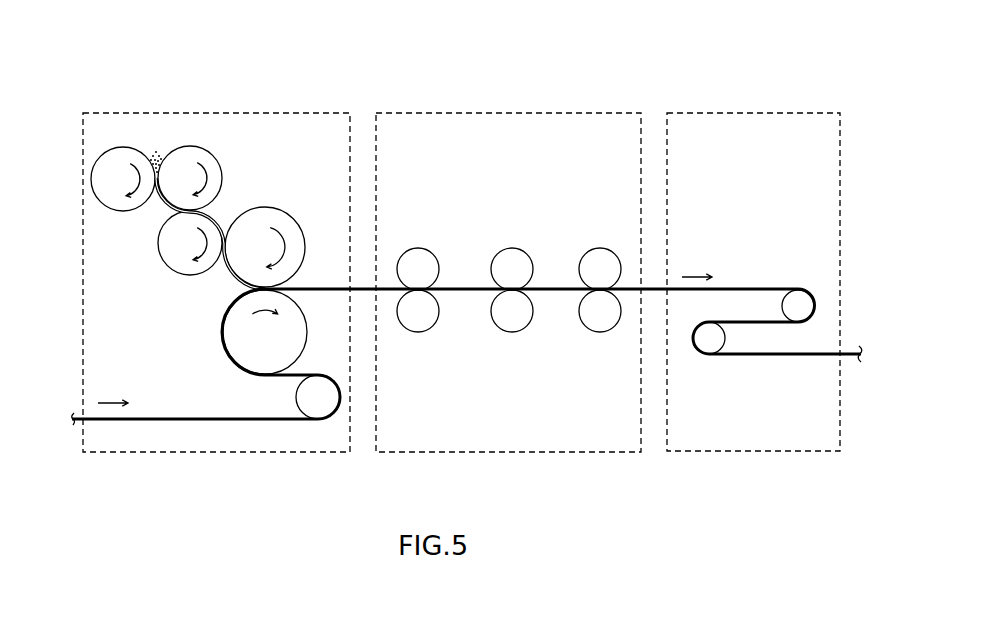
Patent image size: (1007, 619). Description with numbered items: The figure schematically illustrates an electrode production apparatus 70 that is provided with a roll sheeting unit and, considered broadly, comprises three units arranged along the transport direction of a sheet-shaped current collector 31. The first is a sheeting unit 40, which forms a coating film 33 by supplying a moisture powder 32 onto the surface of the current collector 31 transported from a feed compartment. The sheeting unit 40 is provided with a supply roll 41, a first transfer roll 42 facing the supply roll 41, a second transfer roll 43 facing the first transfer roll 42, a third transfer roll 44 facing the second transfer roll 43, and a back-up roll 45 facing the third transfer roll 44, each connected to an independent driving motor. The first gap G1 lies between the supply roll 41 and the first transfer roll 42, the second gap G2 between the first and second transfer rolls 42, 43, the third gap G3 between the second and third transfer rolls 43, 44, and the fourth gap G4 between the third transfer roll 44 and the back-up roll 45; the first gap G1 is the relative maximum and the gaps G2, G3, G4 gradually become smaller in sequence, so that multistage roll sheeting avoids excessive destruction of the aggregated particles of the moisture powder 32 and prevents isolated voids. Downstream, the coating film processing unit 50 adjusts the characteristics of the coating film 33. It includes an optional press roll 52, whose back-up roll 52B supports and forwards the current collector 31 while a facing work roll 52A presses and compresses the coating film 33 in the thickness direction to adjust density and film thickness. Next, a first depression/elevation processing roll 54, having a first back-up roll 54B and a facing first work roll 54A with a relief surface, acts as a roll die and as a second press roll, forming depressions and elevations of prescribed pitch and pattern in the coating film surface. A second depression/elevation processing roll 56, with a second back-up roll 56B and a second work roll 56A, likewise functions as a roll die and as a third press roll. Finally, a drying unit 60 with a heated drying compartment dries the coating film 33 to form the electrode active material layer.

The electrode production apparatus 70 is at (787, 24).
The sheeting unit 40 is at (287, 113).
The supply roll 41 is at (93, 164).
The first transfer roll 42 is at (207, 151).
The second transfer roll 43 is at (163, 264).
The third transfer roll 44 is at (278, 209).
The back-up roll 45 is at (229, 361).
The moisture powder 32 is at (158, 156).
The current collector 31 is at (333, 292).
The coating film 33 is at (337, 286).
The first gap G1 is at (155, 202).
The second gap G2 is at (213, 209).
The third gap G3 is at (219, 266).
The fourth gap G4 is at (240, 287).
The coating film processing unit 50 is at (580, 113).
The press roll 52 is at (438, 256).
The work roll 52A is at (412, 249).
The back-up roll 52B is at (410, 331).
The first depression/elevation processing roll 54 is at (530, 250).
The first work roll 54A is at (503, 251).
The first back-up roll 54B is at (502, 330).
The second depression/elevation processing roll 56 is at (617, 250).
The second work roll 56A is at (589, 251).
The second back-up roll 56B is at (588, 330).
The drying unit 60 is at (778, 113).